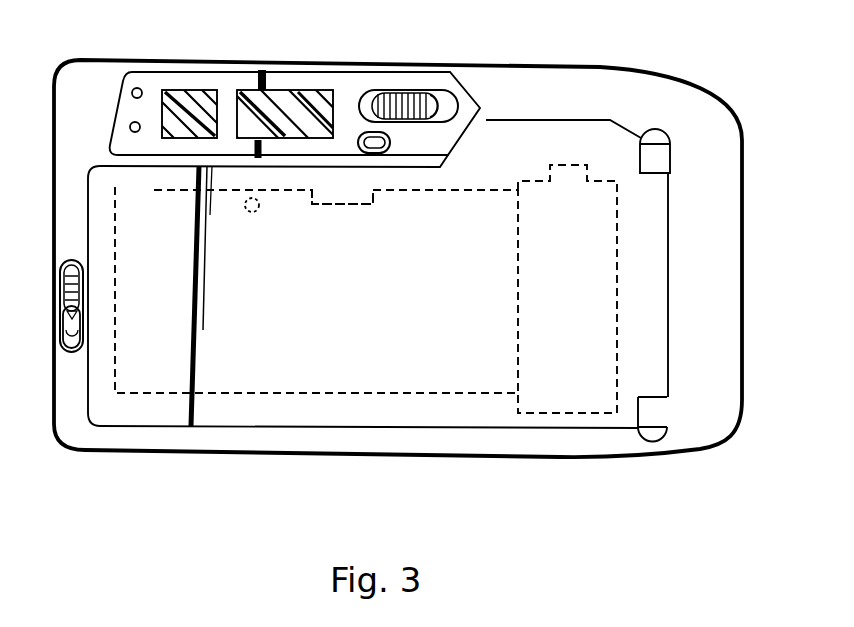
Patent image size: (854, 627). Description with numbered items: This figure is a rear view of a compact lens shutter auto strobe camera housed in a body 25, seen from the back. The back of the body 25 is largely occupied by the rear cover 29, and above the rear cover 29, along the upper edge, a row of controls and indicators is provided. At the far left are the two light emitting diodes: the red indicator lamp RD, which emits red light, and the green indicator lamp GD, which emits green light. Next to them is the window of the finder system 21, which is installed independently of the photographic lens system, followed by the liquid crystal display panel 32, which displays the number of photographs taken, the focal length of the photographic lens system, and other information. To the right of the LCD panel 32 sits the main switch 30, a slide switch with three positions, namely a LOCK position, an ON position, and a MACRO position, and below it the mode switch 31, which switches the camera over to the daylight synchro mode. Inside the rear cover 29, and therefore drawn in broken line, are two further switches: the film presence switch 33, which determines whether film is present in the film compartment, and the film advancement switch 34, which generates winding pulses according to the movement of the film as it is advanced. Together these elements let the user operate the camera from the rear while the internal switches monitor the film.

The finder system 21 is at (190, 92).
The body 25 is at (724, 223).
The rear cover 29 is at (400, 415).
The main switch 30 is at (398, 92).
The mode switch 31 is at (383, 143).
The liquid crystal display panel 32 is at (297, 95).
The film presence switch 33 is at (257, 212).
The film advancement switch 34 is at (368, 207).
The green indicator lamp GD is at (138, 88).
The red indicator lamp RD is at (137, 132).